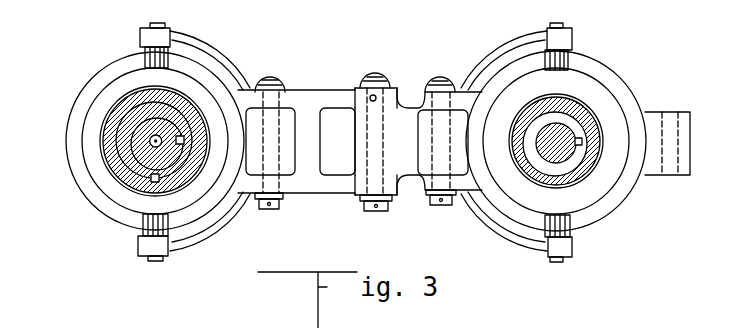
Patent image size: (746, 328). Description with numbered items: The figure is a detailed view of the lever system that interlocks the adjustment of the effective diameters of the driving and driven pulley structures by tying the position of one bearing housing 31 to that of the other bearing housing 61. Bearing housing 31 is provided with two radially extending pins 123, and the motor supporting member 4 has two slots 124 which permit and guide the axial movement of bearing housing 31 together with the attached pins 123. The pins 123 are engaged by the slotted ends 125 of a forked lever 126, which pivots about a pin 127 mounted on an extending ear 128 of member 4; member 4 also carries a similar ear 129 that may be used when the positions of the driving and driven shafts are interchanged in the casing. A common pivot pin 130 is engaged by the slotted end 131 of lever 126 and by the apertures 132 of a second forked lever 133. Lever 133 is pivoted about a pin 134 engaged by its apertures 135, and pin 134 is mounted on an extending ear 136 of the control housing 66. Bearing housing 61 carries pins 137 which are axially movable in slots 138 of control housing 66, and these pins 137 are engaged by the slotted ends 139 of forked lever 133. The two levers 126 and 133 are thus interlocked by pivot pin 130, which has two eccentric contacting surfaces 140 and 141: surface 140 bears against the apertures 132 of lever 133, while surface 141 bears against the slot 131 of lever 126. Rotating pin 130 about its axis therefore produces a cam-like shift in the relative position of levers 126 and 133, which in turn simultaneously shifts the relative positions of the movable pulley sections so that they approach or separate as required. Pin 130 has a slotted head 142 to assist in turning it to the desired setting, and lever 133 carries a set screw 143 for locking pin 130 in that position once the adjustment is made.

The motor supporting member 4 is at (630, 88).
The bearing housing 31 is at (596, 86).
The bearing housing 61 is at (93, 123).
The control housing 66 is at (67, 146).
The pins 123 is at (560, 25).
The slots 124 is at (570, 64).
The slotted ends 125 is at (573, 38).
The forked lever 126 is at (485, 62).
The pin 127 is at (444, 80).
The extending ear 128 is at (429, 87).
The ear 129 is at (658, 110).
The common pivot pin 130 is at (387, 75).
The slotted end 131 is at (360, 150).
The apertures 132 is at (364, 88).
The forked lever 133 is at (313, 88).
The pin 134 is at (270, 78).
The apertures 135 is at (262, 100).
The extending ear 136 is at (283, 197).
The pins 137 is at (150, 24).
The slots 138 is at (143, 60).
The slotted ends 139 is at (140, 37).
The eccentric contacting surface 140 is at (378, 96).
The eccentric contacting surface 141 is at (360, 131).
The slotted head 142 is at (373, 73).
The set screw 143 is at (371, 96).